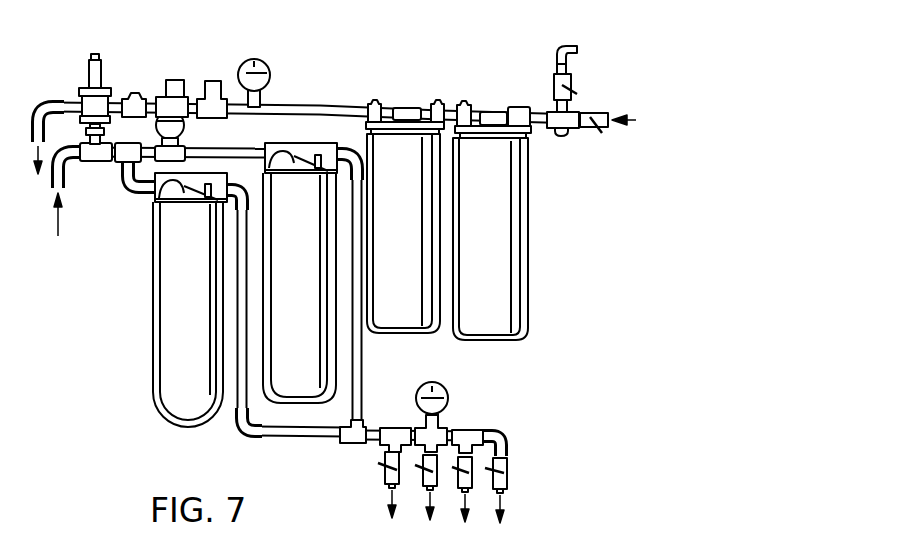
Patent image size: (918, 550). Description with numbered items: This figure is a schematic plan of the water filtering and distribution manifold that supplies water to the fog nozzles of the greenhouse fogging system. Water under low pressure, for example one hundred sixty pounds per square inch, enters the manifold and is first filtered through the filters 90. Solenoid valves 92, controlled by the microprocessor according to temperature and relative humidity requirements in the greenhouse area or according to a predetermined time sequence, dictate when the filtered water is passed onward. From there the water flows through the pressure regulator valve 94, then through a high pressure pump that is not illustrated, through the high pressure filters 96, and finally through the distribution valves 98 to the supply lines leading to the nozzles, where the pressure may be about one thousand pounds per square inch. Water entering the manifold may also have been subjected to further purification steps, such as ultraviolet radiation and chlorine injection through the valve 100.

The filters 90 is at (408, 277).
The solenoid valves 92 is at (184, 92).
The pressure regulator valve 94 is at (99, 60).
The high pressure filters 96 is at (172, 402).
The distribution valves 98 is at (508, 470).
The valve 100 is at (556, 52).